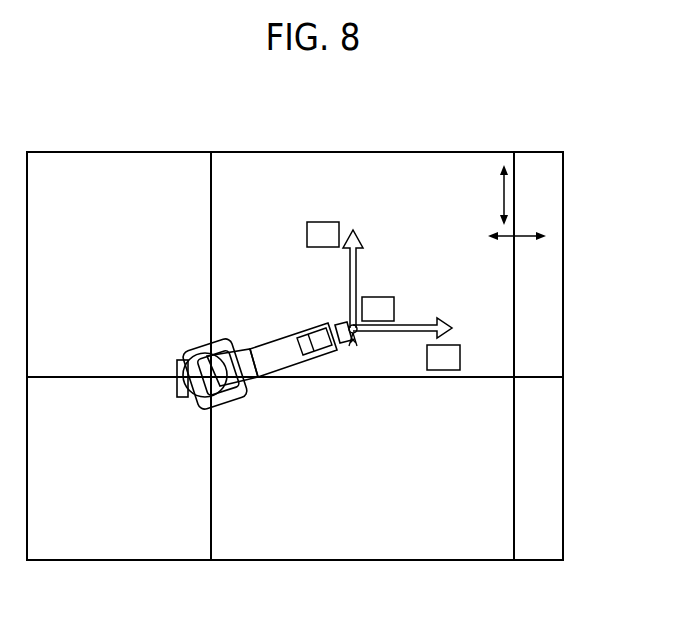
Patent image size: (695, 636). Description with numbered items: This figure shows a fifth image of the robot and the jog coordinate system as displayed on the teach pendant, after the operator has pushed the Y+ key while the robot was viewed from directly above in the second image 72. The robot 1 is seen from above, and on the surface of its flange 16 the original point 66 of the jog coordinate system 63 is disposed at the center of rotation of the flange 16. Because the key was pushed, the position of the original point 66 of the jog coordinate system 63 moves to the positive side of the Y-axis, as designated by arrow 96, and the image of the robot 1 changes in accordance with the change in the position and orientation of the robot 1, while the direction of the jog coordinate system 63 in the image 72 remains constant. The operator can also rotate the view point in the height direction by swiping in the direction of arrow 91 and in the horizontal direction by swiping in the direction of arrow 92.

The robot 1 is at (200, 395).
The flange 16 is at (328, 323).
The jog coordinate system 63 is at (396, 350).
The original point 66 is at (357, 336).
The second image 72 is at (418, 152).
The arrow 91 is at (505, 190).
The arrow 92 is at (522, 238).
The arrow 96 is at (352, 345).